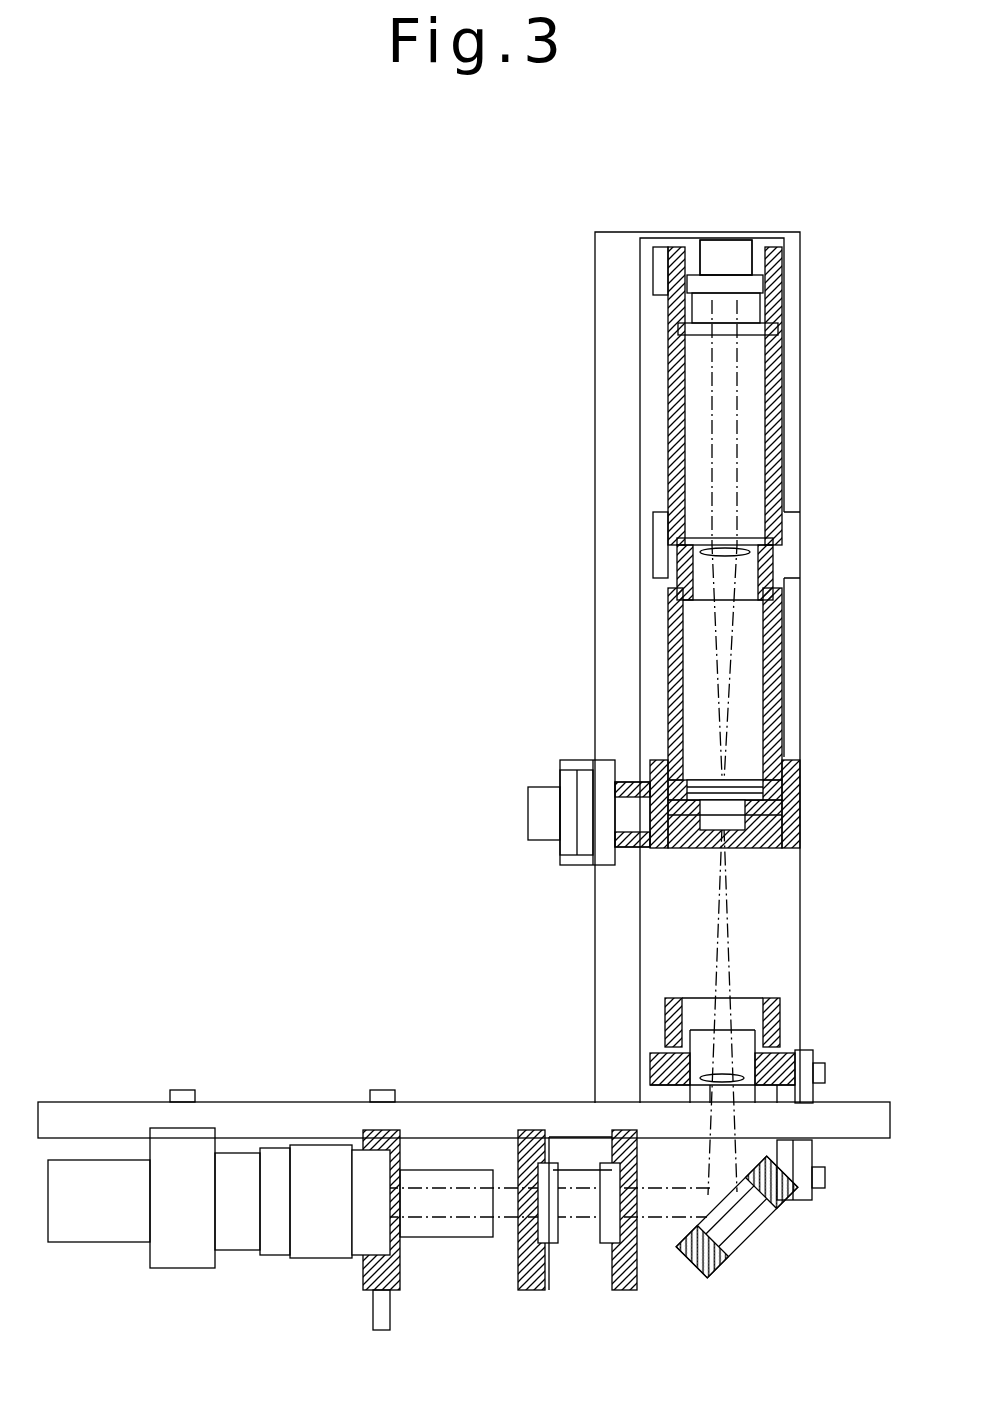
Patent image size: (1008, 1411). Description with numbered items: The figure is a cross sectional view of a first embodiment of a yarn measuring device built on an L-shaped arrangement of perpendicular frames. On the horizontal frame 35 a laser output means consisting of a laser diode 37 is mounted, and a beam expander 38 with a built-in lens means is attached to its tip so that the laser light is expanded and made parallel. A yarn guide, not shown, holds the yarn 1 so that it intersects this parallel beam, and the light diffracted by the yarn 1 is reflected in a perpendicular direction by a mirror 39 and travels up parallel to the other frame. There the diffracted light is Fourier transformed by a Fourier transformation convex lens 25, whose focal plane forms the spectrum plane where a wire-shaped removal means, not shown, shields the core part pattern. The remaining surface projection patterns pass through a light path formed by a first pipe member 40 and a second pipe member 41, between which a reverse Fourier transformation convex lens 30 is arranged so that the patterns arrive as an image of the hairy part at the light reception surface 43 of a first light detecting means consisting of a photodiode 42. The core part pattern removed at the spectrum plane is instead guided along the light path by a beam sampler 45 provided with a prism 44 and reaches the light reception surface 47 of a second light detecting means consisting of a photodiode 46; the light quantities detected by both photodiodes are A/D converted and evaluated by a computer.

The yarn 1 is at (567, 1203).
The Fourier transformation convex lens 25 is at (720, 1065).
The reverse Fourier transformation convex lens 30 is at (730, 557).
The frame 35 is at (300, 1100).
The laser diode 37 is at (90, 1230).
The beam expander 38 is at (313, 1247).
The mirror 39 is at (723, 1212).
The first pipe member 40 is at (782, 690).
The second pipe member 41 is at (783, 428).
The photodiode 42 is at (730, 253).
The light reception surface 43 is at (723, 280).
The prism 44 is at (703, 812).
The beam sampler 45 is at (635, 812).
The photodiode 46 is at (530, 812).
The light reception surface 47 is at (562, 805).